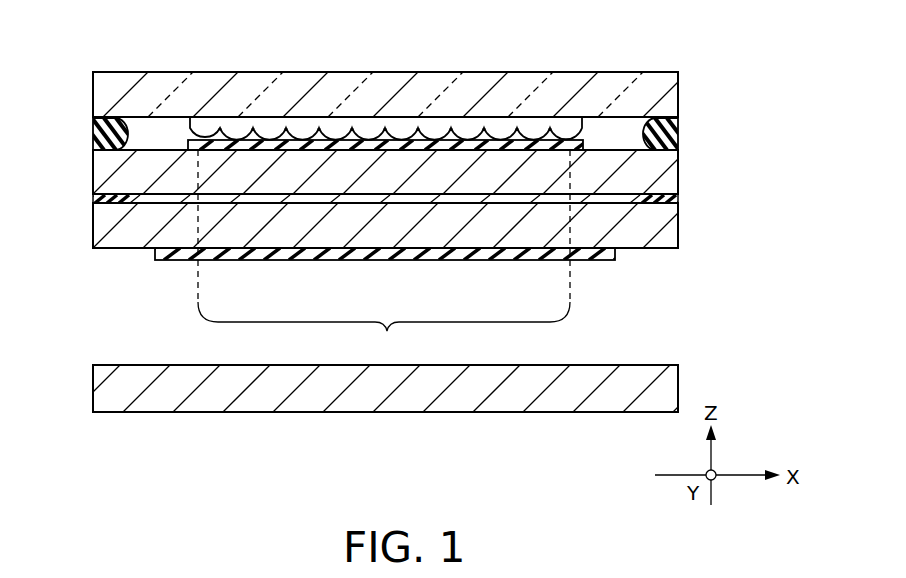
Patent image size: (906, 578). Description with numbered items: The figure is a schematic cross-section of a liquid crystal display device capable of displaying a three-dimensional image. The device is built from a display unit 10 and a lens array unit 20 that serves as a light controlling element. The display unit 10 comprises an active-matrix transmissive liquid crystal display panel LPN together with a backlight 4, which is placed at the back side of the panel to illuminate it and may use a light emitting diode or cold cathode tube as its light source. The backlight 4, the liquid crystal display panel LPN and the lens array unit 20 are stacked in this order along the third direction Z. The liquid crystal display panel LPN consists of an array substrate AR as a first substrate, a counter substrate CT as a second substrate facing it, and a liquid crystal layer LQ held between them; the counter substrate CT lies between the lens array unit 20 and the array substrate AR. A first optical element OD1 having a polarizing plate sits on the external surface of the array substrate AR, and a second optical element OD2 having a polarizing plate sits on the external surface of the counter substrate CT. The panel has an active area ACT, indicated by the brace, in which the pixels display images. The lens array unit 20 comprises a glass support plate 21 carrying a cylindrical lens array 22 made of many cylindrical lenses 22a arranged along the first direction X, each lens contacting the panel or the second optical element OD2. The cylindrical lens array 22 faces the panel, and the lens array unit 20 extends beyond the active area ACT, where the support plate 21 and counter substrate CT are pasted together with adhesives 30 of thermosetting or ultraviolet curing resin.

The backlight 4 is at (665, 380).
The display unit 10 is at (351, 249).
The lens array unit 20 is at (409, 78).
The support plate 21 is at (608, 97).
The cylindrical lens array 22 is at (363, 83).
The cylindrical lens 22a is at (205, 125).
The adhesives 30 is at (94, 136).
The liquid crystal display panel LPN is at (407, 249).
The counter substrate CT is at (625, 178).
The array substrate AR is at (665, 238).
The liquid crystal layer LQ is at (340, 200).
The first optical element OD1 is at (525, 258).
The second optical element OD2 is at (457, 150).
The active area ACT is at (384, 254).